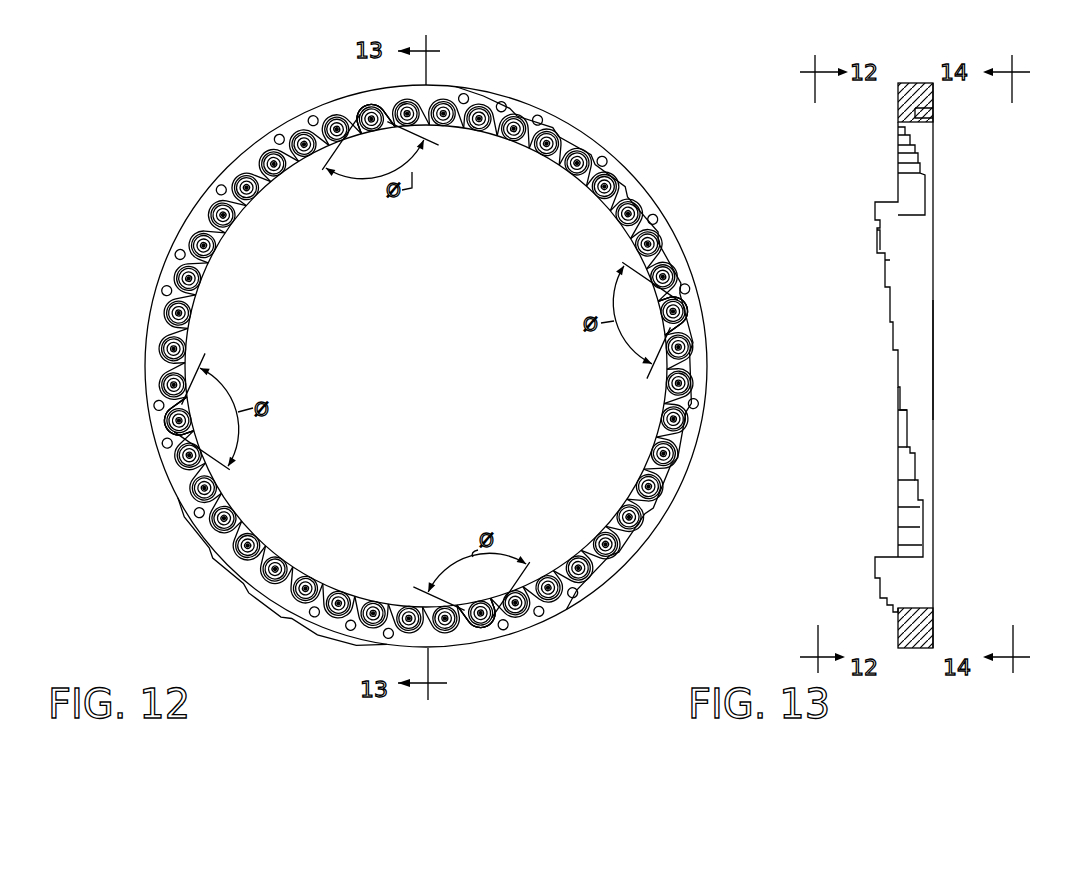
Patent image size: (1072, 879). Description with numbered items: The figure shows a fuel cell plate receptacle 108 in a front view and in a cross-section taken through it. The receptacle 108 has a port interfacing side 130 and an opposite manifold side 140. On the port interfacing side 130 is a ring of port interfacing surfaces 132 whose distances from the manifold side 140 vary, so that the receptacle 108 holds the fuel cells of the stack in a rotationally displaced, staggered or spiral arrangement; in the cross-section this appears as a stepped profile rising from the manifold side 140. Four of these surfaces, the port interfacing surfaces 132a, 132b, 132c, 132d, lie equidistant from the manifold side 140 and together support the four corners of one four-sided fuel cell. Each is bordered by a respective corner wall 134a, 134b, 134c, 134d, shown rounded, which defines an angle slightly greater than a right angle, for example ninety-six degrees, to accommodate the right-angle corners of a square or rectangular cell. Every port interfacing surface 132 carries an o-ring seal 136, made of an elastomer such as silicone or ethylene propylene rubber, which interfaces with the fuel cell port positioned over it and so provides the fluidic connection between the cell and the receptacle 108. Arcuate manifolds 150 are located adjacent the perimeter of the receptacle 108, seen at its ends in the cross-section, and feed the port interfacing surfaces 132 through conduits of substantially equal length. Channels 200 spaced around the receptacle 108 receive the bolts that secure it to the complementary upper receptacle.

In FIG. 12, the receptacle 108 is at (474, 74).
In FIG. 13, the receptacle 108 is at (903, 72).
In FIG. 12, the port interfacing side 130 is at (254, 147).
In FIG. 13, the port interfacing side 130 is at (872, 374).
In FIG. 13, the port interfacing surfaces 132 is at (886, 272).
In FIG. 12, the port interfacing surface 132a is at (384, 124).
In FIG. 12, the port interfacing surface 132b is at (670, 330).
In FIG. 12, the port interfacing surface 132c is at (466, 616).
In FIG. 12, the port interfacing surface 132d is at (185, 403).
In FIG. 12, the corner wall 134a is at (350, 103).
In FIG. 12, the corner wall 134b is at (684, 284).
In FIG. 12, the corner wall 134c is at (503, 622).
In FIG. 12, the corner wall 134d is at (170, 452).
In FIG. 12, the o-ring seal 136 is at (640, 228).
In FIG. 13, the manifold side 140 is at (984, 357).
In FIG. 13, the manifolds 150 is at (942, 113).
In FIG. 12, the channels 200 is at (509, 99).